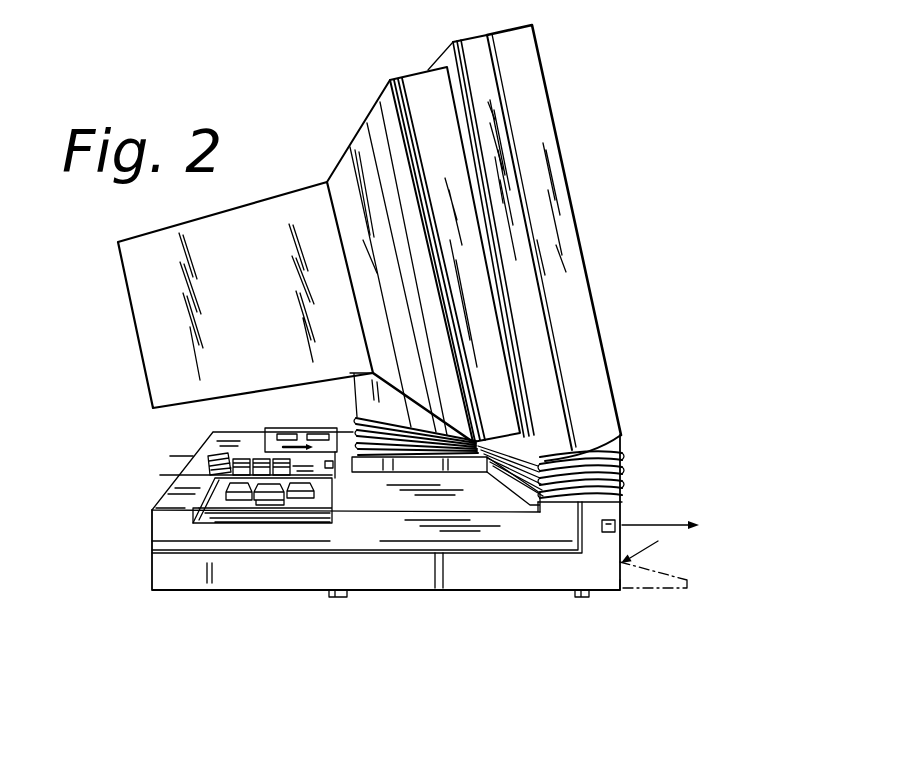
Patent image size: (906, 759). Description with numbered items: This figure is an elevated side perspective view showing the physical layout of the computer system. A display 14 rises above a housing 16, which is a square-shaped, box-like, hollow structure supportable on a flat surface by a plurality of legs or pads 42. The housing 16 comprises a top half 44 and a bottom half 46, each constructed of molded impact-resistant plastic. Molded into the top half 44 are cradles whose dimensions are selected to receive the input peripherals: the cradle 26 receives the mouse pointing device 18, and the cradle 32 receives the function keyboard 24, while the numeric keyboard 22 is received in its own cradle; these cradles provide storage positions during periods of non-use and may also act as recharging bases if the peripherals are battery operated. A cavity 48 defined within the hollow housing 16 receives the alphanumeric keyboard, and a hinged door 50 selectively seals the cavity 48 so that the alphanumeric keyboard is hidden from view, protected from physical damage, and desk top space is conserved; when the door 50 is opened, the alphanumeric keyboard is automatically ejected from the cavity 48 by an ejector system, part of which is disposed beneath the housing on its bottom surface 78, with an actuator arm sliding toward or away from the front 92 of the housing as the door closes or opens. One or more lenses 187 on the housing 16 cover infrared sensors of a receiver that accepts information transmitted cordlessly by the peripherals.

The display 14 is at (550, 98).
The housing 16 is at (458, 578).
The mouse pointing device 18 is at (300, 428).
The numeric keyboard 22 is at (196, 463).
The function keyboard 24 is at (222, 505).
The cradle 26 is at (270, 430).
The cradle 32 is at (198, 522).
The legs or pads 42 is at (336, 597).
The top half 44 is at (152, 526).
The bottom half 46 is at (152, 572).
The cavity 48 is at (652, 547).
The hinged door 50 is at (694, 578).
The bottom surface 78 is at (381, 594).
The front 92 is at (623, 580).
The lenses 187 is at (616, 523).